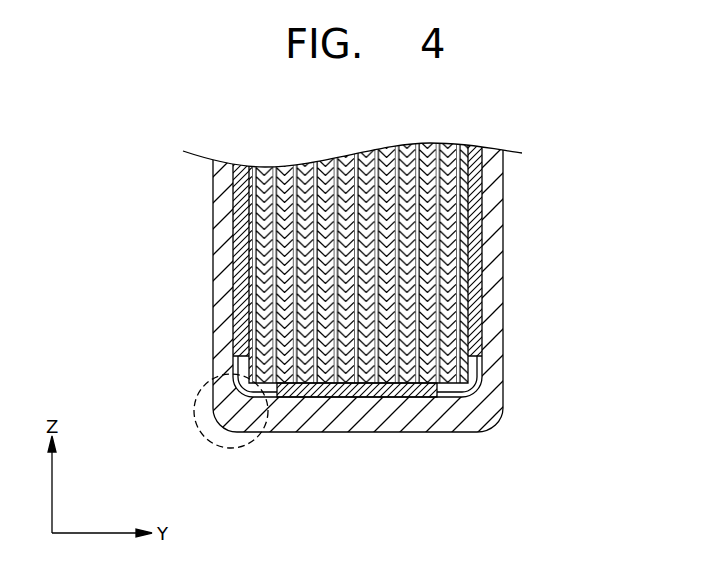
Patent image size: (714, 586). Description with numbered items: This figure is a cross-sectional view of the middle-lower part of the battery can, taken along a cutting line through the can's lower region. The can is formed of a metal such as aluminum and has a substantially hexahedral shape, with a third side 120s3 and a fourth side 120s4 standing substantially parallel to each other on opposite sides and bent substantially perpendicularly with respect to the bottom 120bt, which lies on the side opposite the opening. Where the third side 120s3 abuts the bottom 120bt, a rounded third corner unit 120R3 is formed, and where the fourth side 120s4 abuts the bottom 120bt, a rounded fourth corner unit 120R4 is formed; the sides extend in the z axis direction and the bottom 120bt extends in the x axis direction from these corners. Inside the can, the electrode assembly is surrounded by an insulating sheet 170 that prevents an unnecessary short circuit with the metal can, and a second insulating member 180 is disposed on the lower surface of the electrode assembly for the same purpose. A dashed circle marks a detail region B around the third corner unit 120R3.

The third side 120s3 is at (222, 196).
The fourth side 120s4 is at (490, 198).
The bottom 120bt is at (410, 417).
The third corner unit 120R3 is at (232, 432).
The fourth corner unit 120R4 is at (483, 432).
The insulating sheet 170 is at (237, 252).
The second insulating member 180 is at (344, 394).
The detail region B is at (197, 400).